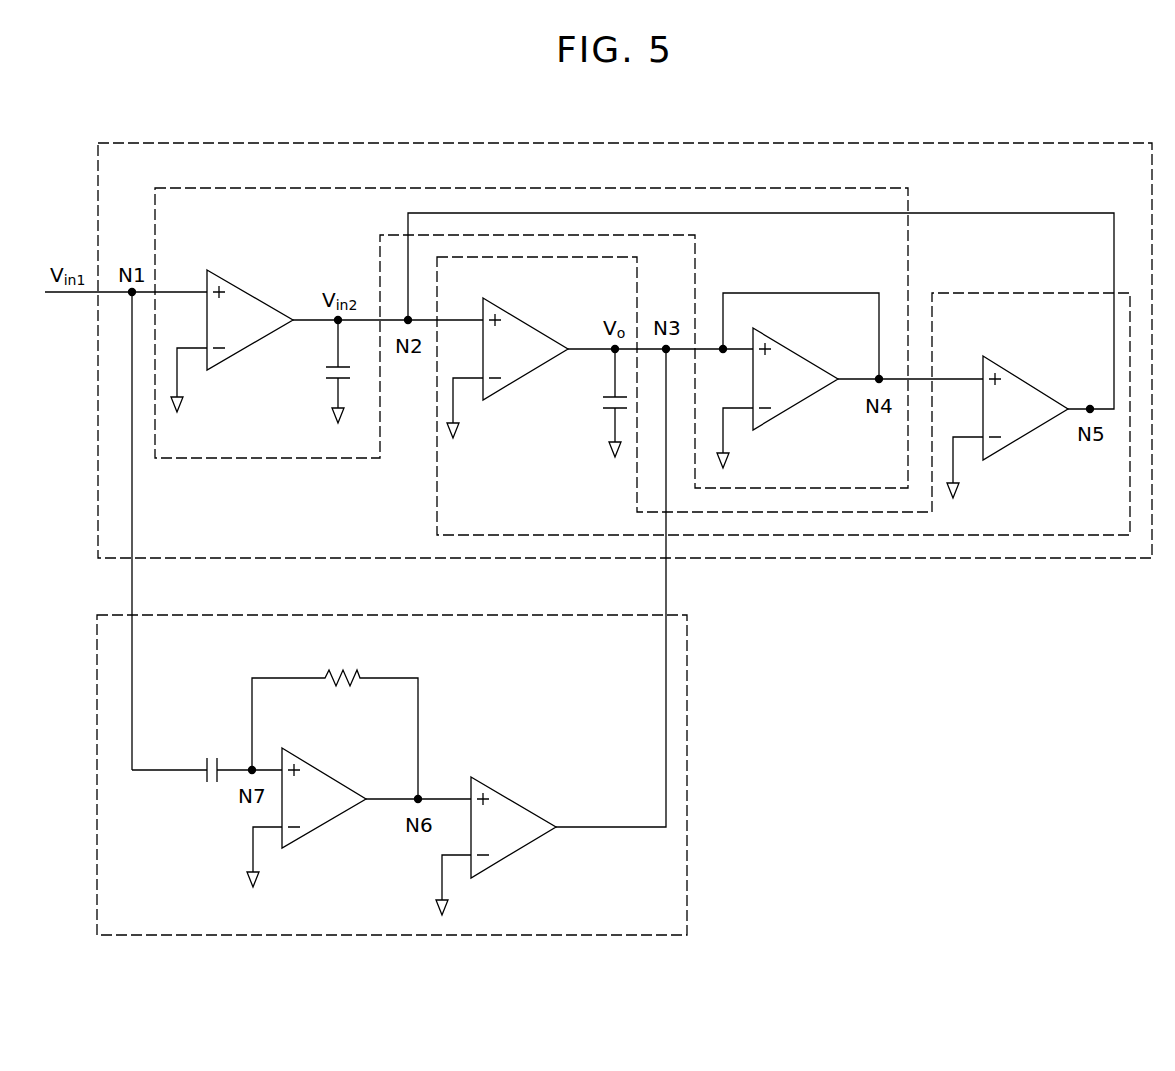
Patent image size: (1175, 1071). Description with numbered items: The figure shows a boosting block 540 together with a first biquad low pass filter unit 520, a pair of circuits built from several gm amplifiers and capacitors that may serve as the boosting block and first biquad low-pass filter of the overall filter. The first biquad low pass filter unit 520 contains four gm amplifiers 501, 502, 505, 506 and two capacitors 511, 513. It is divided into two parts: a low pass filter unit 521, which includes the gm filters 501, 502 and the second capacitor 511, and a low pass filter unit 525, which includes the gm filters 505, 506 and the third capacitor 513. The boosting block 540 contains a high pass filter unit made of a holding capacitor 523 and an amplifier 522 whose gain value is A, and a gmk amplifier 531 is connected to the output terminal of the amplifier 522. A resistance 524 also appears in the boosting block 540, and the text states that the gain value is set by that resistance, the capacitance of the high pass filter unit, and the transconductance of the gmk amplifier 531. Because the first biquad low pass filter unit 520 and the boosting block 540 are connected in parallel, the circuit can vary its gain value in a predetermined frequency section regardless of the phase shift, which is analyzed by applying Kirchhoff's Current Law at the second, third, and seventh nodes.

The first biquad low pass filter unit 520 is at (626, 143).
The low pass filter unit 521 is at (265, 188).
The low pass filter unit 525 is at (1012, 293).
The boosting block 540 is at (403, 614).
The gm amplifier 501 is at (253, 293).
The capacitor (C2) 511 is at (288, 371).
The gm amplifier 505 is at (530, 322).
The capacitor (C3) 513 is at (563, 402).
The gm amplifier 502 is at (800, 352).
The gm amplifier 506 is at (1027, 380).
The amplifier 522 is at (325, 772).
The capacitor CH 523 is at (211, 747).
The resistor R 524 is at (360, 648).
The gmk amplifier 531 is at (516, 797).